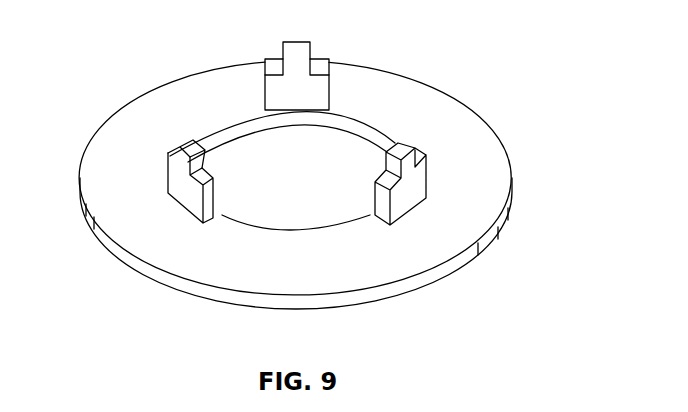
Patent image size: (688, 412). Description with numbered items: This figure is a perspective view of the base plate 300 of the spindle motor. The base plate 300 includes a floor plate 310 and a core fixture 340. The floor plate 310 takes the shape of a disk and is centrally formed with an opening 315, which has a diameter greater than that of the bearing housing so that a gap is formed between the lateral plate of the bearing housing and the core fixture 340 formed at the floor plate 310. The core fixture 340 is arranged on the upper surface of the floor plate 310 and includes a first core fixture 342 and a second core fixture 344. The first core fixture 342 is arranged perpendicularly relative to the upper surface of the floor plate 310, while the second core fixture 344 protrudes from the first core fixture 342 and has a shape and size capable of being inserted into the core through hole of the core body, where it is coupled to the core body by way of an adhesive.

The base plate 300 is at (483, 110).
The floor plate 310 is at (483, 187).
The opening 315 is at (273, 168).
The core fixture 340 is at (188, 211).
The first core fixture 342 is at (177, 182).
The second core fixture 344 is at (182, 163).